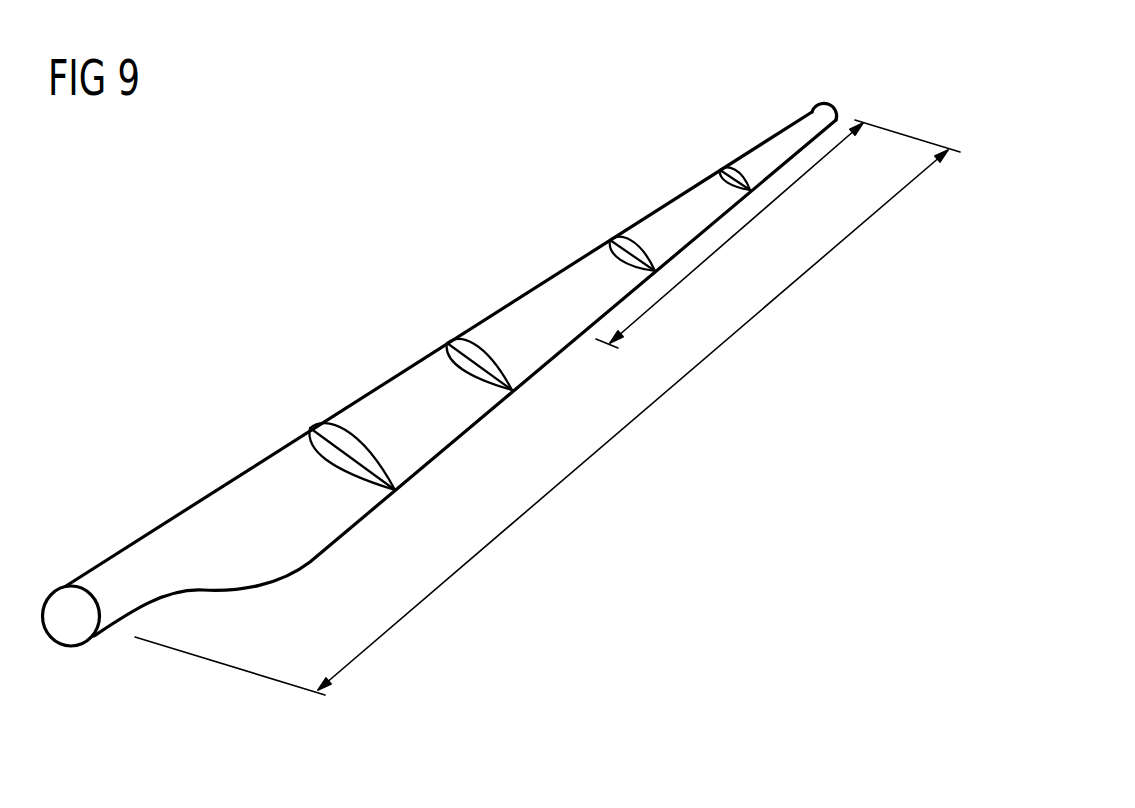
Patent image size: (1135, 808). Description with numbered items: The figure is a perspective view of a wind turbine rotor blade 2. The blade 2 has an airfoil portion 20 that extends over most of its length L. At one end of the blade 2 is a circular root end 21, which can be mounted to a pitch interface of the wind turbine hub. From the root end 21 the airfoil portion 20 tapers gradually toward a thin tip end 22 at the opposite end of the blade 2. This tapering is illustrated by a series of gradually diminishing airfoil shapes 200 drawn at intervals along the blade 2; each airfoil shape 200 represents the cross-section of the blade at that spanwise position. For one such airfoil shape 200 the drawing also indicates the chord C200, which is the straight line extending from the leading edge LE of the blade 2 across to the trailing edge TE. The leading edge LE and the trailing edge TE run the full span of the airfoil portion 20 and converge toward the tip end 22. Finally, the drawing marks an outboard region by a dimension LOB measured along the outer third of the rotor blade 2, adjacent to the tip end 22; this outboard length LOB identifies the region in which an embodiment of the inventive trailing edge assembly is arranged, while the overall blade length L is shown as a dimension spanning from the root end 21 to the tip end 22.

The wind turbine rotor blade 2 is at (272, 258).
The airfoil portion 20 is at (515, 317).
The circular root end 21 is at (100, 580).
The tip end 22 is at (812, 118).
The airfoil shape 200 is at (360, 437).
The chord C200 is at (330, 452).
The leading edge LE is at (210, 493).
The trailing edge TE is at (430, 470).
The length L is at (633, 422).
The outboard length LOB is at (738, 237).